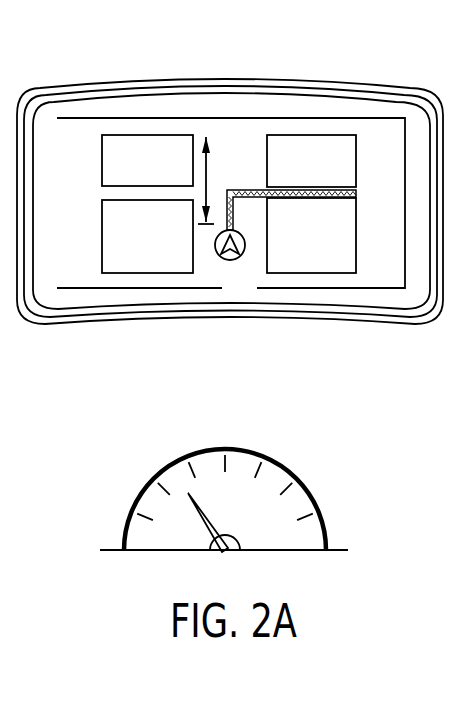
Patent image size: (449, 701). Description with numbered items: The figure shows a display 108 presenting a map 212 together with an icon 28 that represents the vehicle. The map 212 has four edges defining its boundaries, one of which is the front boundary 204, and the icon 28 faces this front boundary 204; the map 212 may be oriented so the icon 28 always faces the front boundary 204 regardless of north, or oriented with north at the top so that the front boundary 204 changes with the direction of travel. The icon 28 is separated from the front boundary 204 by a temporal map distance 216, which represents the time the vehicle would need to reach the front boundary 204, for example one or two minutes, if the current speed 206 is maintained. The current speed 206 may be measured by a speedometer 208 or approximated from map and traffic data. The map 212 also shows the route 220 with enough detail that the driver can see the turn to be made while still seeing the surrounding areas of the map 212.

The display 108 is at (130, 134).
The front boundary 204 is at (235, 118).
The map 212 is at (128, 222).
The temporal map distance 216 is at (204, 176).
The route 220 is at (318, 197).
The icon 28 is at (231, 260).
The current speed 206 is at (170, 465).
The speedometer 208 is at (372, 498).